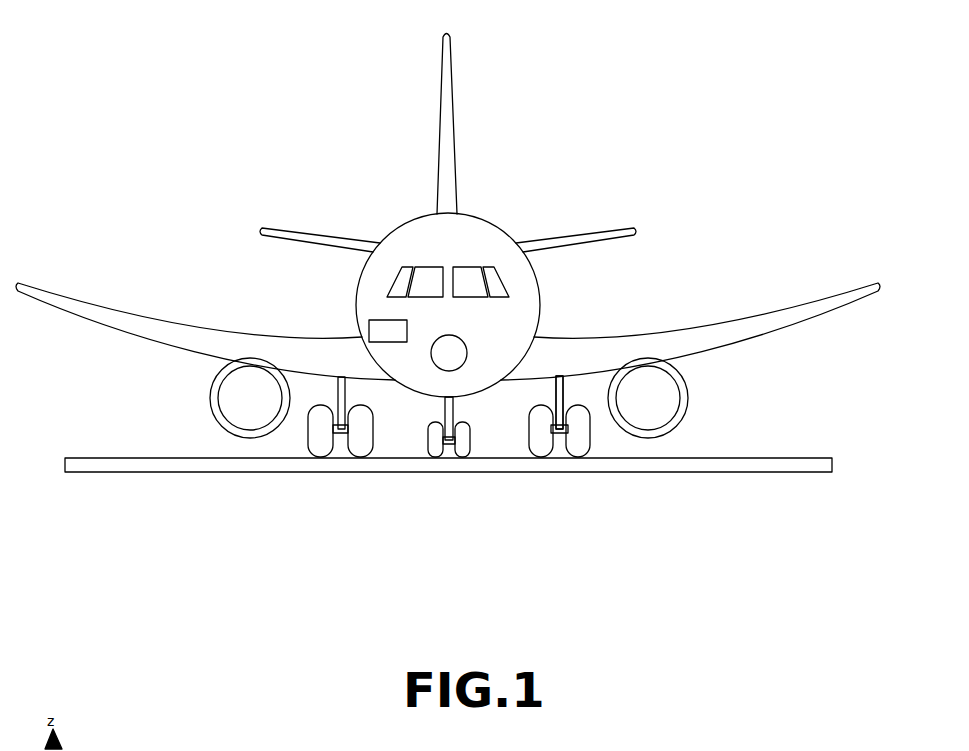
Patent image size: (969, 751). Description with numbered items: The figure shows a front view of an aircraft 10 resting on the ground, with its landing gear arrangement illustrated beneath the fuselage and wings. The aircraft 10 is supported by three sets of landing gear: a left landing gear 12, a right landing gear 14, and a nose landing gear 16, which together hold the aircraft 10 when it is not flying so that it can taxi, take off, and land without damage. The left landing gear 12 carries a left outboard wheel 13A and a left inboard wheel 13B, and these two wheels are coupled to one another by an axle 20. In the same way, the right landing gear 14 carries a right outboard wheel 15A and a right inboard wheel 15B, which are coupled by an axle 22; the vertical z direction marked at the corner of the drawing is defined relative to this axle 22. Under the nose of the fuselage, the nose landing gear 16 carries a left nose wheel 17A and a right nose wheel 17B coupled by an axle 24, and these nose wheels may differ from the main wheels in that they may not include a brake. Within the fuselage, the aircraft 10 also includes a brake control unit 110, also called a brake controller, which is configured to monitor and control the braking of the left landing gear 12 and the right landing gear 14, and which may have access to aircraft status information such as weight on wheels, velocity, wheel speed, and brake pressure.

The aircraft 10 is at (287, 127).
The brake control unit 110 is at (380, 328).
The left landing gear 12 is at (598, 438).
The right landing gear 14 is at (293, 440).
The left outboard wheel 13A is at (592, 453).
The left inboard wheel 13B is at (478, 418).
The right outboard wheel 15A is at (310, 452).
The right inboard wheel 15B is at (375, 455).
The nose landing gear 16 is at (545, 404).
The left nose wheel 17A is at (473, 453).
The right nose wheel 17B is at (430, 453).
The axle 20 is at (559, 452).
The axle 22 is at (336, 455).
The axle 24 is at (448, 452).